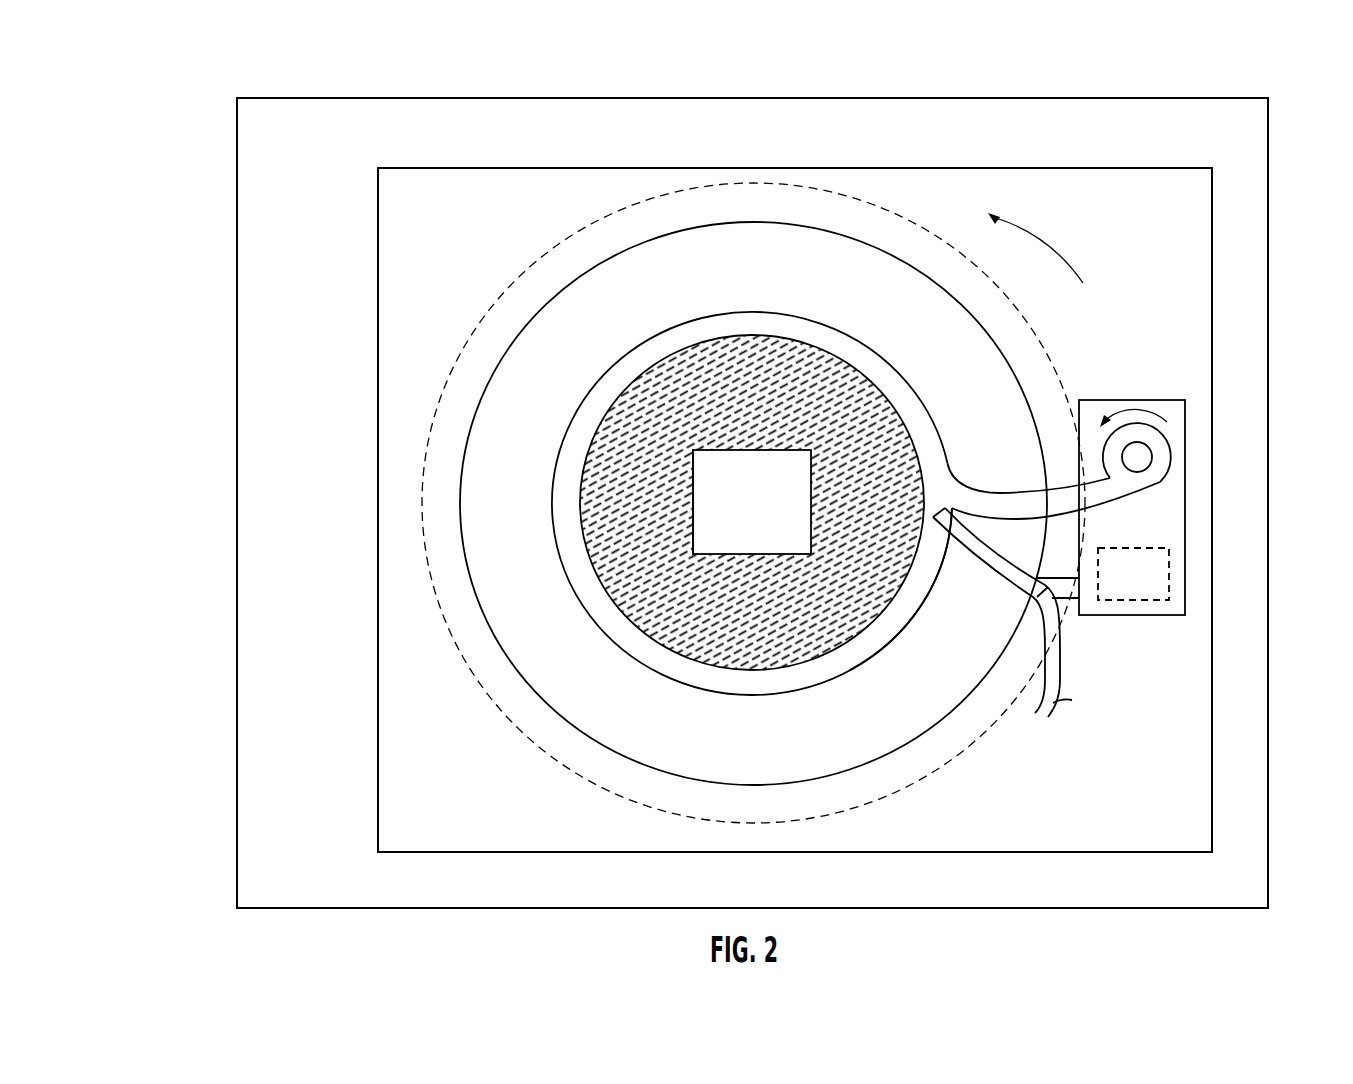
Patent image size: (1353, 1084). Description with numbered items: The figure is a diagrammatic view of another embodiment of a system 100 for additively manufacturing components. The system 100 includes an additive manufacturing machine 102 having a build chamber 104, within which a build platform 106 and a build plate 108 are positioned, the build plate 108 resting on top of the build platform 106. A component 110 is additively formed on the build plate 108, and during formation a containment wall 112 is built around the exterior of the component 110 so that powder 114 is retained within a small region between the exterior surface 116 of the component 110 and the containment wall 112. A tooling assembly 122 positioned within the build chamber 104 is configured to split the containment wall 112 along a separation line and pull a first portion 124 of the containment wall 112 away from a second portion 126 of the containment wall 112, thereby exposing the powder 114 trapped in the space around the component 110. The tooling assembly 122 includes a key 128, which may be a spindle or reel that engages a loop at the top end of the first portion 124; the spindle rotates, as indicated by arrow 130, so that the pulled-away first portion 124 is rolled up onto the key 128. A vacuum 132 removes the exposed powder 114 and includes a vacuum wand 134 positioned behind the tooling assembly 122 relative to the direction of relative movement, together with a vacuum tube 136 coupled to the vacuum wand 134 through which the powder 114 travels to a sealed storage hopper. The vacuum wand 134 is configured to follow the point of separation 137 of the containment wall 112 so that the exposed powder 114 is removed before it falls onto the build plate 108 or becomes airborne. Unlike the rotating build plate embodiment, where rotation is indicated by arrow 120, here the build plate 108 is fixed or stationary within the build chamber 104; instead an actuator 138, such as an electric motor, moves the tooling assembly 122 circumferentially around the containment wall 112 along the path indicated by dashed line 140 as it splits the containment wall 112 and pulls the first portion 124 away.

The system 100 is at (212, 85).
The additive manufacturing machine 102 is at (326, 86).
The build chamber 104 is at (500, 97).
The build platform 106 is at (378, 348).
The build plate 108 is at (577, 277).
The component 110 is at (769, 518).
The containment wall 112 is at (664, 320).
The powder 114 is at (868, 503).
The exterior surface 116 is at (693, 500).
The arrow 120 is at (1060, 255).
The tooling assembly 122 is at (1145, 616).
The first portion 124 is at (968, 483).
The second portion 126 is at (933, 562).
The key 128 is at (1137, 457).
The arrow 130 is at (1113, 405).
The vacuum 132 is at (1035, 607).
The vacuum wand 134 is at (997, 572).
The vacuum tube 136 is at (1062, 665).
The point of separation 137 is at (917, 493).
The actuator 138 is at (1170, 547).
The dashed line 140 is at (947, 218).